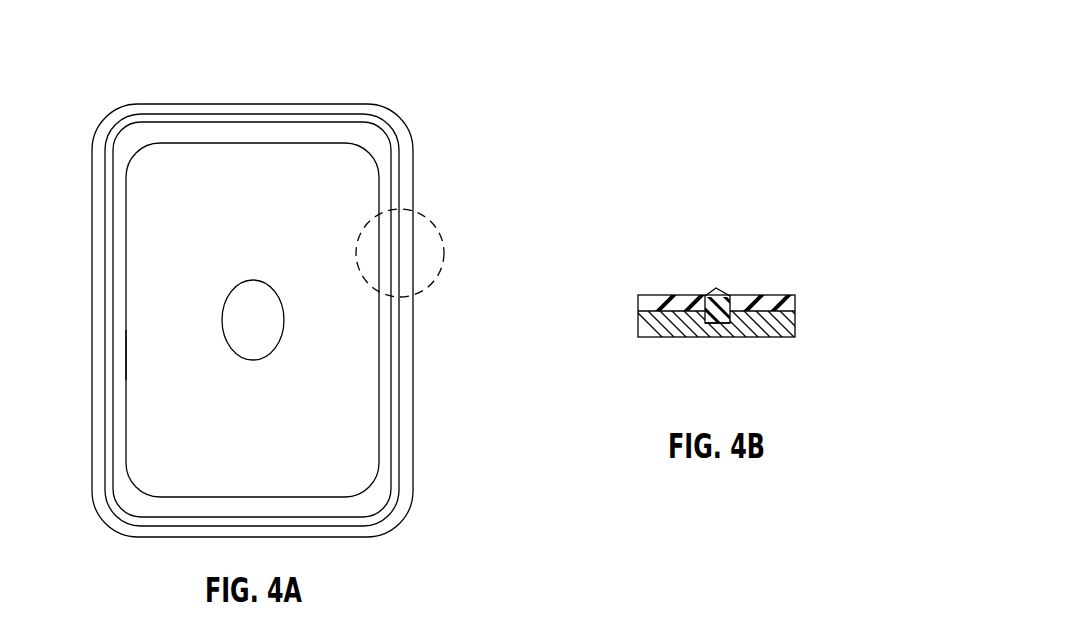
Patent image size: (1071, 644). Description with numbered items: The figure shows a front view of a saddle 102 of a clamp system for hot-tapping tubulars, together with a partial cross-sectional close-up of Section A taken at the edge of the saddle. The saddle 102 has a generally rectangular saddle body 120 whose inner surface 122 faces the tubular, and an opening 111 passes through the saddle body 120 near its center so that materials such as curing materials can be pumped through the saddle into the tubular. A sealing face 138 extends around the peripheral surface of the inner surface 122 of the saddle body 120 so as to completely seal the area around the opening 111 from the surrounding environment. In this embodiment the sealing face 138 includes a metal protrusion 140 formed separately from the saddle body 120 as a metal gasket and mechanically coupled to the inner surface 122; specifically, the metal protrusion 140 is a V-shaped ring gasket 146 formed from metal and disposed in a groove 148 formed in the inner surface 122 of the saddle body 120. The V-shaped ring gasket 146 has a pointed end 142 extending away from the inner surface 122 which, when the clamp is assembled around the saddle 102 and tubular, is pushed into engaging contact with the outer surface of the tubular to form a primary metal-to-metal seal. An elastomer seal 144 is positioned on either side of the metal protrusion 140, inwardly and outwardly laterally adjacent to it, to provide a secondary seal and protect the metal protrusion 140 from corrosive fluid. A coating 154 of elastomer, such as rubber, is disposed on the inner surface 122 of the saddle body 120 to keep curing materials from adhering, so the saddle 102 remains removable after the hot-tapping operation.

In FIG. 4A, the saddle 102 is at (337, 77).
In FIG. 4A, the sealing face 138 is at (400, 180).
In FIG. 4A, the coating 154 is at (378, 468).
In FIG. 4A, the inner surface 122 is at (175, 178).
In FIG. 4A, the saddle body 120 is at (140, 360).
In FIG. 4B, the saddle body 120 is at (787, 326).
In FIG. 4A, the opening 111 is at (248, 312).
In FIG. 4A, the Section A is at (437, 228).
In FIG. 4B, the metal protrusion 140 is at (732, 272).
In FIG. 4B, the pointed end 142 is at (714, 290).
In FIG. 4B, the elastomer seal 144 is at (653, 302).
In FIG. 4B, the V-shaped ring gasket 146 is at (723, 297).
In FIG. 4B, the groove 148 is at (717, 324).